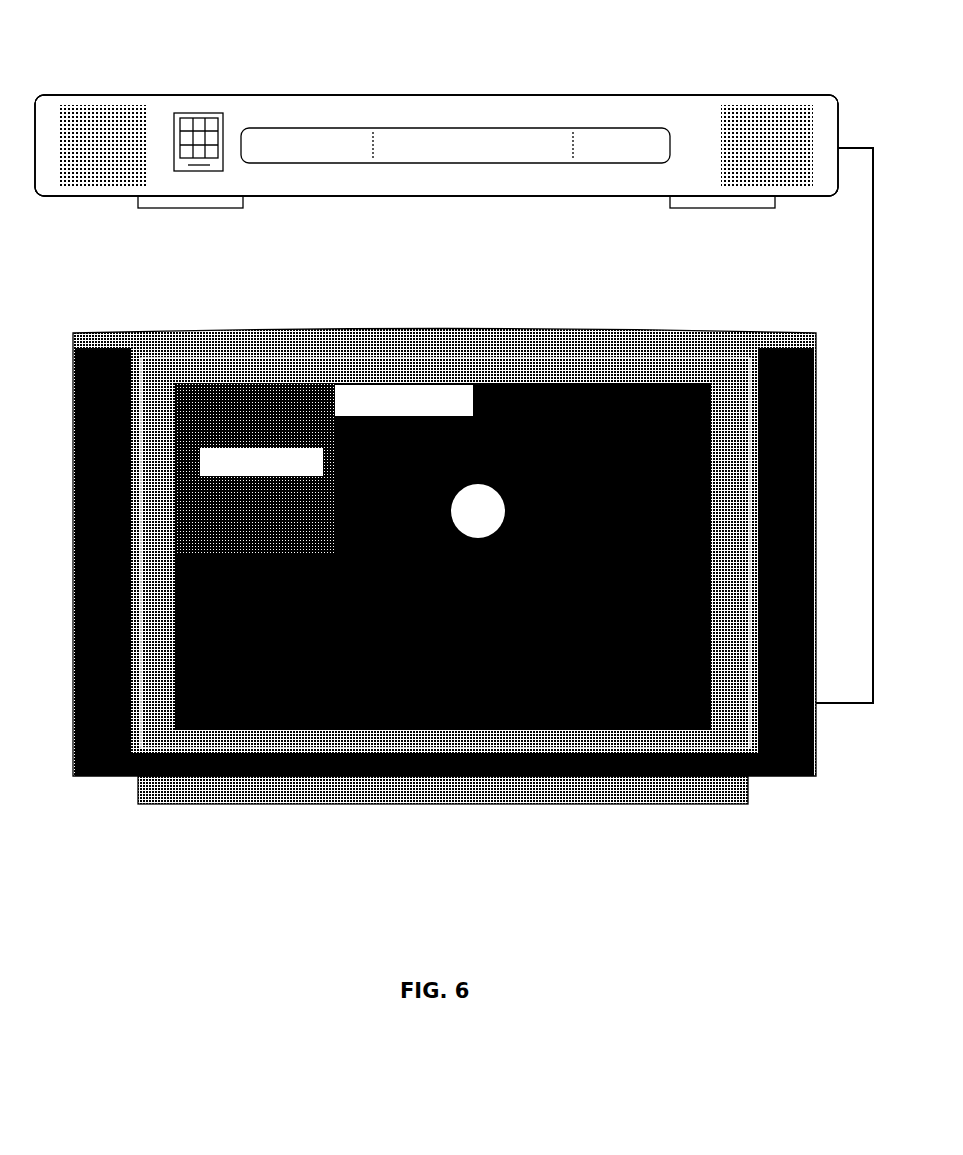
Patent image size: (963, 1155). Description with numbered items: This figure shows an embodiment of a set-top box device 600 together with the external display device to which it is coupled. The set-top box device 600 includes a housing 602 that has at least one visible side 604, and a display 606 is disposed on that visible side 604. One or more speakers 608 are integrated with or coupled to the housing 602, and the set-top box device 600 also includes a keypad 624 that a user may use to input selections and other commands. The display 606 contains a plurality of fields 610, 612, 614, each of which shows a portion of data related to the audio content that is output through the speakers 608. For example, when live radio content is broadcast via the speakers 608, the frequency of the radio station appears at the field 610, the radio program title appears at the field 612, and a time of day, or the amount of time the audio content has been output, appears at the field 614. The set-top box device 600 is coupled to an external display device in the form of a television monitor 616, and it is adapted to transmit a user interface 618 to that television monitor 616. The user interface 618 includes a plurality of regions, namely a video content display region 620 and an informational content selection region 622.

The set-top box device 600 is at (229, 84).
The housing 602 is at (675, 110).
The visible side 604 is at (436, 145).
The display 606 is at (357, 119).
The speakers 608 is at (79, 95).
The field 610 is at (293, 150).
The field 612 is at (461, 150).
The field 614 is at (615, 150).
The television monitor 616 is at (137, 327).
The user interface 618 is at (261, 391).
The video content display region 620 is at (459, 387).
The informational content selection region 622 is at (170, 467).
The keypad 624 is at (179, 106).